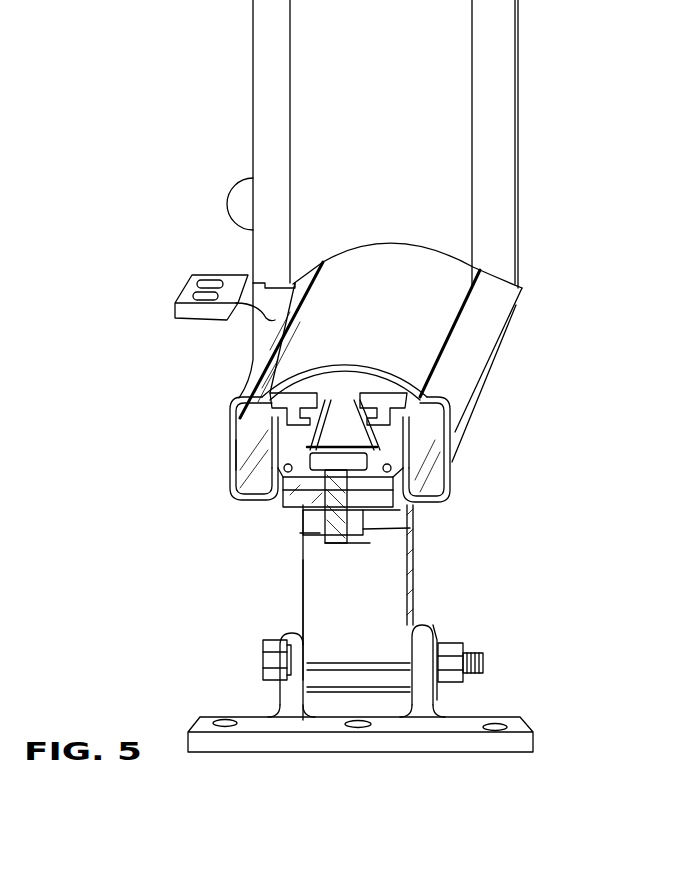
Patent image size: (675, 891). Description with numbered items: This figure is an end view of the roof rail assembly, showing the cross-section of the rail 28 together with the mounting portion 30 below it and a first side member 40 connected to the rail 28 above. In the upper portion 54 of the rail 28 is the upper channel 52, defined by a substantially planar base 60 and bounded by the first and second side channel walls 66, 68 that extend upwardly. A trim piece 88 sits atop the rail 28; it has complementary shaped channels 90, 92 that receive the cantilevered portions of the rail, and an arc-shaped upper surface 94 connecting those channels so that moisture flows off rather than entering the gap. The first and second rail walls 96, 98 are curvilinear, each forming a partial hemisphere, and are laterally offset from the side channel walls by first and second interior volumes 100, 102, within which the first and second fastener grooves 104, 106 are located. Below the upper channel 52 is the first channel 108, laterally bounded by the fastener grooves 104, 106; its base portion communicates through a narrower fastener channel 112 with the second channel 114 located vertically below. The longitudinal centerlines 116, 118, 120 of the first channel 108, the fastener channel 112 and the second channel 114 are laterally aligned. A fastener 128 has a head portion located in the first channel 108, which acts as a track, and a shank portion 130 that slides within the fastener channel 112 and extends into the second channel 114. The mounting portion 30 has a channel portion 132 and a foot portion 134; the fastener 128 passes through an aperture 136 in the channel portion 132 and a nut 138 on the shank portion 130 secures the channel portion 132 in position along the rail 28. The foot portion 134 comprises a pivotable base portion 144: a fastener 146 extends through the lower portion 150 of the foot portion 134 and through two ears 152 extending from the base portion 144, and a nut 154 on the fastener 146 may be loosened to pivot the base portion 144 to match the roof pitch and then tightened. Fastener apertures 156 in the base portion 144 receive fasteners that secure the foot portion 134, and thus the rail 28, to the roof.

The rail 28 is at (497, 302).
The mounting portion 30 is at (417, 600).
The first side member 40 is at (500, 30).
The upper channel 52 is at (352, 400).
The upper portion 54 is at (235, 394).
The base 60 is at (368, 377).
The first side channel wall 66 is at (277, 437).
The second side channel wall 68 is at (413, 420).
The trim piece 88 is at (307, 310).
The first channel of trim piece 90 is at (307, 393).
The second channel of trim piece 92 is at (393, 387).
The upper surface 94 is at (398, 250).
The first rail wall 96 is at (230, 453).
The second rail wall 98 is at (487, 373).
The first interior volume 100 is at (242, 435).
The second interior volume 102 is at (433, 473).
The first fastener groove 104 is at (287, 468).
The second fastener groove 106 is at (420, 478).
The first channel 108 is at (297, 503).
The fastener channel 112 is at (393, 505).
The second channel 114 is at (320, 507).
The longitudinal centerline of first channel 116 is at (338, 456).
The longitudinal centerline of fastener channel 118 is at (270, 612).
The longitudinal centerline of second channel 120 is at (317, 547).
The fastener 128 is at (400, 475).
The shank portion 130 is at (393, 523).
The channel portion 132 is at (288, 507).
The foot portion 134 is at (433, 630).
The aperture 136 is at (300, 557).
The nut 138 is at (380, 543).
The base portion 144 is at (528, 720).
The fastener 146 is at (263, 657).
The lower portion 150 is at (377, 694).
The ears 152 is at (280, 703).
The nut 154 is at (457, 658).
The fastener apertures 156 is at (247, 724).